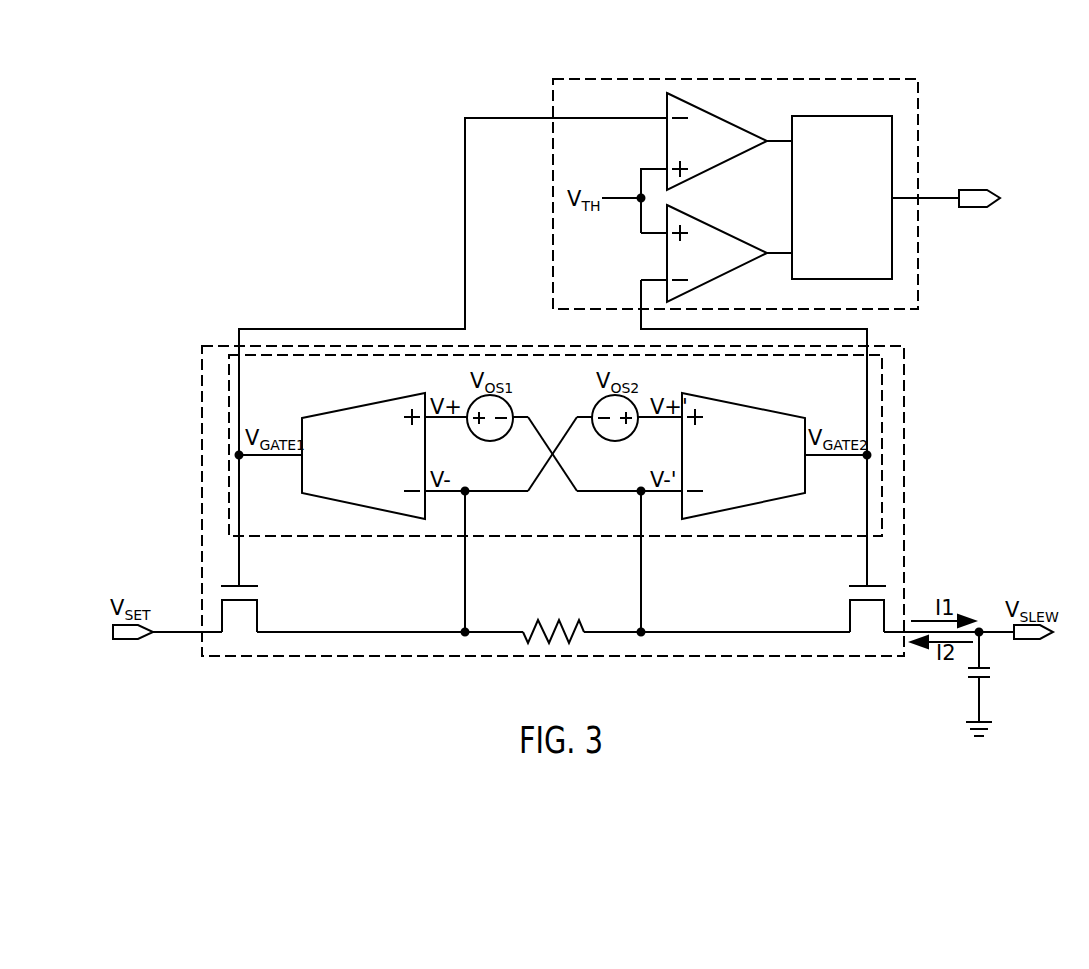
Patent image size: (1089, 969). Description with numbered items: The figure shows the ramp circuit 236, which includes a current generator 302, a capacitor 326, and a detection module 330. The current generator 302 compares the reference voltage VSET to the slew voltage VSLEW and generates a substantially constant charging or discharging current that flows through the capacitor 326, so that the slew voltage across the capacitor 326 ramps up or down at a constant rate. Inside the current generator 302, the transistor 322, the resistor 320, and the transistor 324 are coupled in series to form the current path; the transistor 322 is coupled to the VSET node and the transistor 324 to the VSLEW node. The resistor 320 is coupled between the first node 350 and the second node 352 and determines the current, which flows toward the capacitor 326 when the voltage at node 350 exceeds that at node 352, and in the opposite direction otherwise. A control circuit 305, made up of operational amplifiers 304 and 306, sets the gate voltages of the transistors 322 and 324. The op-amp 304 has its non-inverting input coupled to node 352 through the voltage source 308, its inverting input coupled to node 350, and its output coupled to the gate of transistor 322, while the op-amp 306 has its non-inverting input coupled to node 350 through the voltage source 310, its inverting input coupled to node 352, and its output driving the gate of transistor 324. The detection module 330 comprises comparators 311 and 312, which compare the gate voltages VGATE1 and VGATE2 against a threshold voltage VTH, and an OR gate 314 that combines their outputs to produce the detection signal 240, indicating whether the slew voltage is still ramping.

The ramp circuit 236 is at (185, 157).
The detection signal 240 is at (951, 197).
The current generator 302 is at (905, 432).
The operational amplifier 304 is at (372, 404).
The control circuit 305 is at (335, 537).
The operational amplifier 306 is at (737, 404).
The voltage source 308 is at (486, 441).
The voltage source 310 is at (613, 441).
The comparator 311 is at (712, 112).
The comparator 312 is at (704, 219).
The OR gate 314 is at (858, 239).
The resistor 320 is at (560, 620).
The transistor 322 is at (258, 614).
The transistor 324 is at (850, 586).
The capacitor 326 is at (985, 678).
The detection module 330 is at (918, 122).
The first node 350 is at (463, 630).
The second node 352 is at (644, 628).